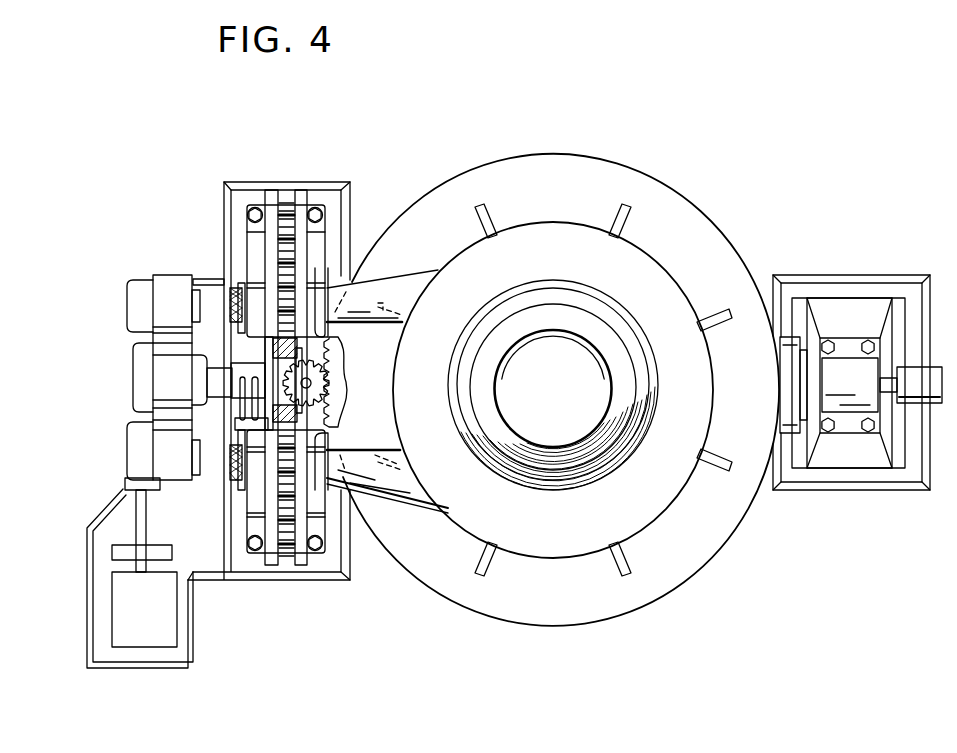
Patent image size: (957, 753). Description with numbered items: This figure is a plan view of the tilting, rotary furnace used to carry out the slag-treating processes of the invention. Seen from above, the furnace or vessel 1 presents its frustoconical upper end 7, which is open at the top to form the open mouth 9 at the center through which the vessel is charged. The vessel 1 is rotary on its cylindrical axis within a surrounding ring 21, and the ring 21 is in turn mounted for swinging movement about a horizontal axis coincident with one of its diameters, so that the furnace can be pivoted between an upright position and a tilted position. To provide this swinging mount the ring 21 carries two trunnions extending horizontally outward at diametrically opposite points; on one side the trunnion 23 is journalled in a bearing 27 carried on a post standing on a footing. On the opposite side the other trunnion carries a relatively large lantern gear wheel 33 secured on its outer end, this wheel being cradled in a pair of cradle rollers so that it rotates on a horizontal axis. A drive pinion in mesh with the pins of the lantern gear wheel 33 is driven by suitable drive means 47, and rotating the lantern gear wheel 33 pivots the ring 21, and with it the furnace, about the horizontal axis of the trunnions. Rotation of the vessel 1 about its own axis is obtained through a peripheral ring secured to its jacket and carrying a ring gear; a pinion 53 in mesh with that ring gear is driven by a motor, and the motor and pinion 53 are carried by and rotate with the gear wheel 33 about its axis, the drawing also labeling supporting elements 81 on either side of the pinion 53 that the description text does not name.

The vessel 1 is at (561, 405).
The frustoconical upper end 7 is at (665, 325).
The open mouth 9 is at (560, 404).
The ring 21 is at (590, 627).
The trunnion 23 is at (782, 413).
The bearing 27 is at (862, 382).
The lantern gear wheel 33 is at (272, 572).
The drive means 47 is at (126, 456).
The pinion 53 is at (288, 376).
The bearings 81 is at (232, 290).